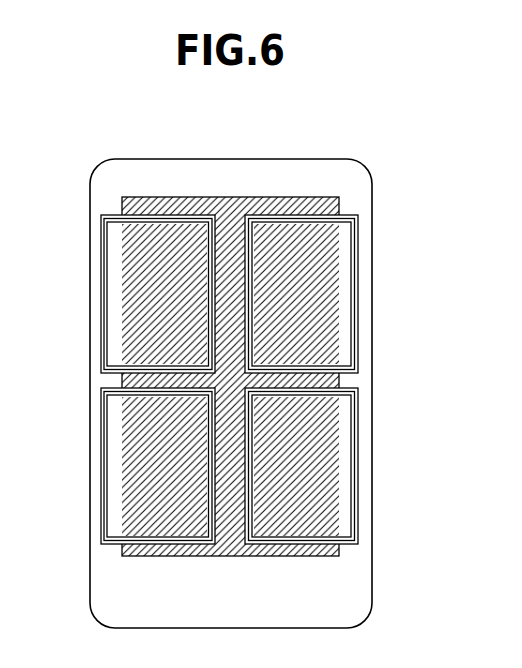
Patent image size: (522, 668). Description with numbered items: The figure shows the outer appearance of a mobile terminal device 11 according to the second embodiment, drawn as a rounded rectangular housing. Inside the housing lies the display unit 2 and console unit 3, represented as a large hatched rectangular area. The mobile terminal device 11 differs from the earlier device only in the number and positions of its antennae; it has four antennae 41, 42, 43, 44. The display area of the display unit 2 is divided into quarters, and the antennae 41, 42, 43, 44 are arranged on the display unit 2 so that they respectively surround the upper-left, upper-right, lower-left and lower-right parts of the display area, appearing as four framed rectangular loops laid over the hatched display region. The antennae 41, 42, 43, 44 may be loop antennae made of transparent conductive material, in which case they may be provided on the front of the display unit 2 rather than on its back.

The display unit 2 is at (230, 328).
The console unit 3 is at (232, 221).
The mobile terminal device 11 is at (362, 163).
The antenna 41 is at (99, 284).
The antenna 42 is at (362, 284).
The antenna 43 is at (99, 456).
The antenna 44 is at (362, 457).